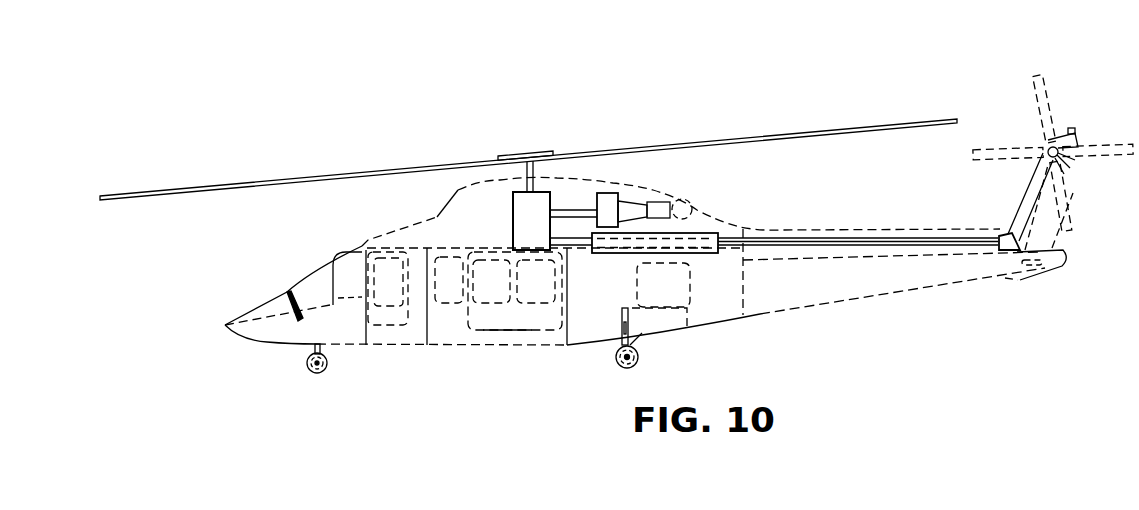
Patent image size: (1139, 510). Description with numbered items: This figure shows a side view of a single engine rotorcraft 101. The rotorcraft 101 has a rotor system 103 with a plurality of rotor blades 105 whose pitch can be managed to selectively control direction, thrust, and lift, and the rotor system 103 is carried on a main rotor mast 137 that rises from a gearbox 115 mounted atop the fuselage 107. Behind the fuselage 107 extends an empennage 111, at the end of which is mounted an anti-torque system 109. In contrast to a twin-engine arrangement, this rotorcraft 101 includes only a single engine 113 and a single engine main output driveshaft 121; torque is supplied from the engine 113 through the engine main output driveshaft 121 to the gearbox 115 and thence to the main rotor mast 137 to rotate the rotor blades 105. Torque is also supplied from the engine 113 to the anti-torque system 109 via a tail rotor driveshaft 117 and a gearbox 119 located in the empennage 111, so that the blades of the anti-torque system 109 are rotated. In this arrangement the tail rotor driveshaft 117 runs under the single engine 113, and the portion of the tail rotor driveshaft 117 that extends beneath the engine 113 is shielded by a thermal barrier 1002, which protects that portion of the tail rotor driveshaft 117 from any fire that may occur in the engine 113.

The rotorcraft 101 is at (404, 88).
The rotor system 103 is at (526, 140).
The rotor blades 105 is at (824, 130).
The fuselage 107 is at (487, 347).
The anti-torque system 109 is at (1082, 130).
The empennage 111 is at (950, 287).
The engine 113 is at (660, 203).
The gearbox 115 is at (513, 232).
The tail rotor driveshaft 117 is at (848, 238).
The gearbox 119 is at (1008, 232).
The engine main output driveshaft 121 is at (572, 208).
The main rotor mast 137 is at (526, 176).
The thermal barrier 1002 is at (705, 233).